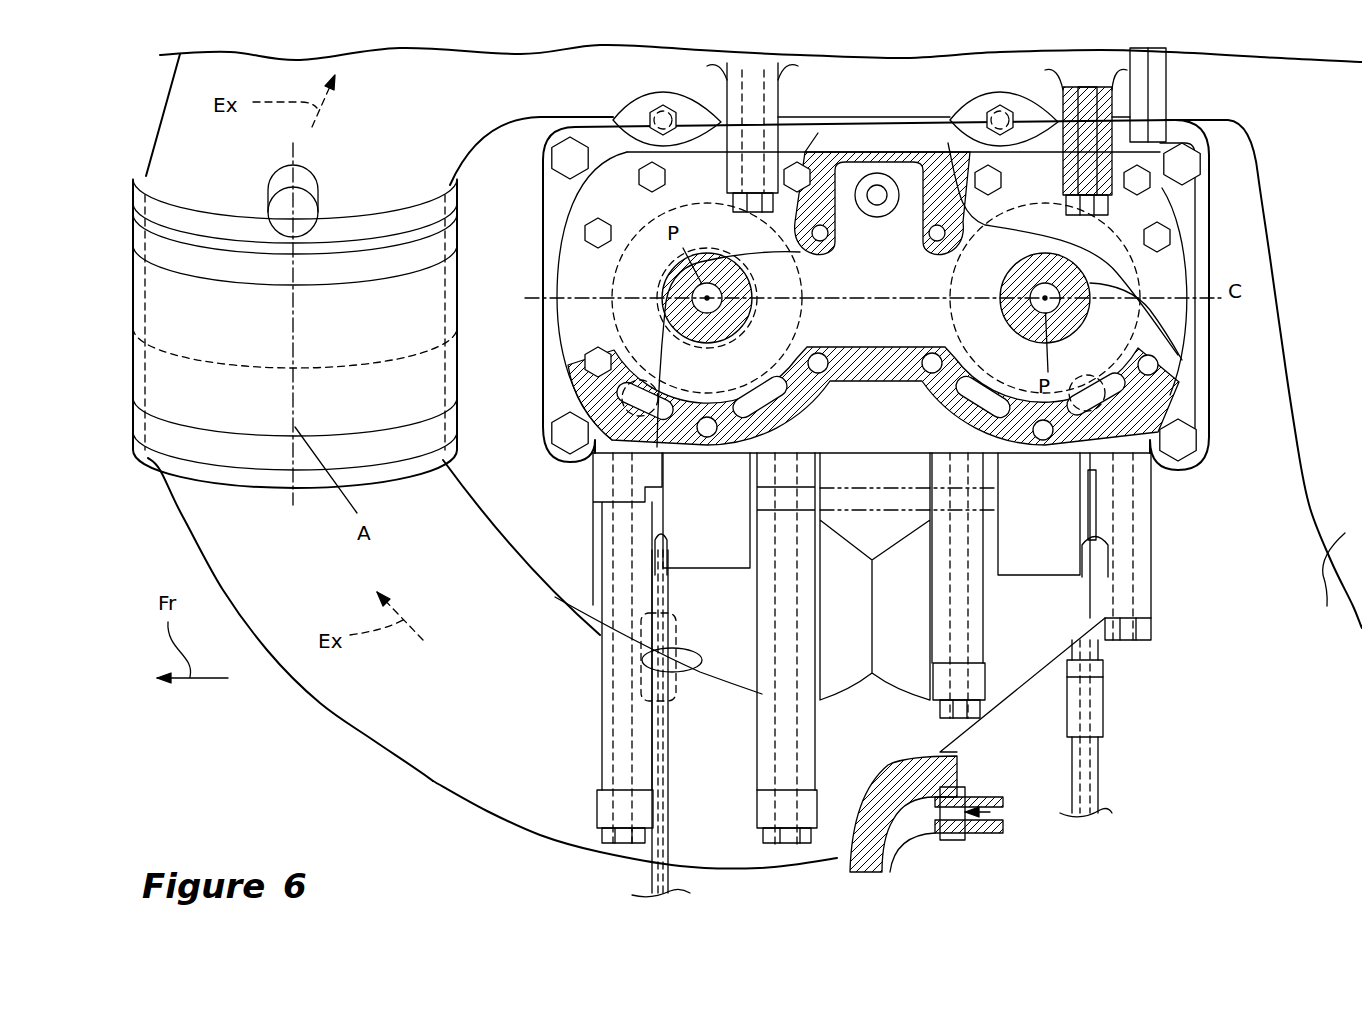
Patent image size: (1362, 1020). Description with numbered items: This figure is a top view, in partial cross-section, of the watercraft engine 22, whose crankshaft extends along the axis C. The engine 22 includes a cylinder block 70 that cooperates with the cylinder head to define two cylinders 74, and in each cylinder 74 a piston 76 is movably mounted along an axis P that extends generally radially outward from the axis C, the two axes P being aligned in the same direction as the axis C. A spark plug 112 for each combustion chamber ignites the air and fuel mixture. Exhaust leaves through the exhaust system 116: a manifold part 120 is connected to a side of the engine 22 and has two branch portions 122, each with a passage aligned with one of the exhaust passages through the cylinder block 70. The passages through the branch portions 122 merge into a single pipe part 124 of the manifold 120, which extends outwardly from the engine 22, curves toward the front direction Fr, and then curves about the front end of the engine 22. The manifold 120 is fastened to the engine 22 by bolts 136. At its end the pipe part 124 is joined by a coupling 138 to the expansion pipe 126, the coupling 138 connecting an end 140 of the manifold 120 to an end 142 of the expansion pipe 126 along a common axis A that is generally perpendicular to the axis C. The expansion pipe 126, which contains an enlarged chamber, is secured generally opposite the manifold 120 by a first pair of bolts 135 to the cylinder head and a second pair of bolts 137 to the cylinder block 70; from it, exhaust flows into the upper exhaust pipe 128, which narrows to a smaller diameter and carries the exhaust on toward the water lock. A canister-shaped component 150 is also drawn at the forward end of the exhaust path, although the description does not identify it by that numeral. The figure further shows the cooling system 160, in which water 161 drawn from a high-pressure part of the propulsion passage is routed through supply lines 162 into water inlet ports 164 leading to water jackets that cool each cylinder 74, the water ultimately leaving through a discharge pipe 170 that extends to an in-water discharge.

The engine 22 is at (1218, 177).
The cylinder block 70 is at (1172, 250).
The cylinders 74 is at (600, 398).
The piston 76 is at (737, 447).
The spark plug 112 is at (720, 290).
The exhaust system 116 is at (283, 732).
The manifold part 120 is at (400, 767).
The branch portions 122 is at (905, 552).
The pipe part 124 is at (493, 790).
The expansion pipe 126 is at (493, 137).
The upper exhaust pipe 128 is at (1263, 377).
The first pair of bolts 135 is at (743, 113).
The bolts 136 is at (610, 705).
The second pair of bolts 137 is at (632, 113).
The coupling 138 is at (440, 293).
The end of the manifold 140 is at (398, 387).
The end of the expansion pipe 142 is at (400, 330).
The filter canister 150 is at (360, 260).
The cooling system 160 is at (1238, 737).
The water 161 is at (1020, 813).
The supply lines 162 is at (643, 782).
The water inlet ports 164 is at (652, 548).
The discharge pipe 170 is at (873, 185).